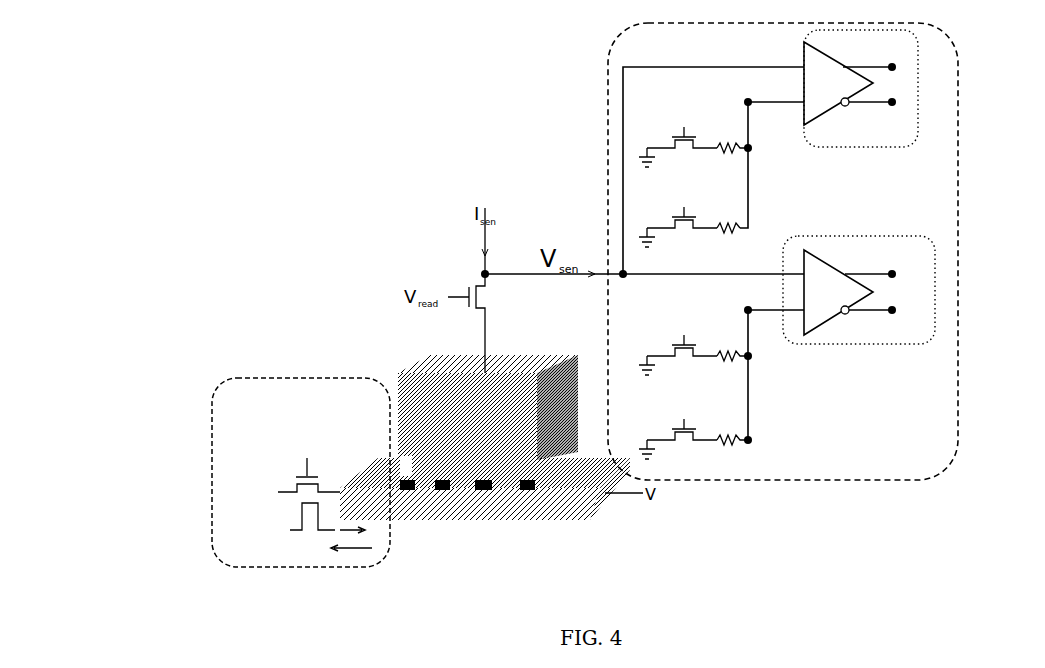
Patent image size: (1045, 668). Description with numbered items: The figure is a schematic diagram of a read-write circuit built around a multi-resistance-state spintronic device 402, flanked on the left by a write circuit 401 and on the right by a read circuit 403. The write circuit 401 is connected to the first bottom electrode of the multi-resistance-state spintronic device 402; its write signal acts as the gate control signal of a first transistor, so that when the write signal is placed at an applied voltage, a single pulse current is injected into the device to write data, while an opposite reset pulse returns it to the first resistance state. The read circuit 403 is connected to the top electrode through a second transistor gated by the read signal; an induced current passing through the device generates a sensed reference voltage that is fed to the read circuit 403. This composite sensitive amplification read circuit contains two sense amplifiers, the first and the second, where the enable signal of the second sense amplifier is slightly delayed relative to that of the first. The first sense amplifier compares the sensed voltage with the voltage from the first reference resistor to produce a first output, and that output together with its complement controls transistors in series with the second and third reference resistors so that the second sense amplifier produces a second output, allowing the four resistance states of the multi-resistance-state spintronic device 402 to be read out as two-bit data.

The write circuit 401 is at (310, 372).
The multi-resistance-state spintronic device 402 is at (415, 370).
The read circuit 403 is at (604, 110).